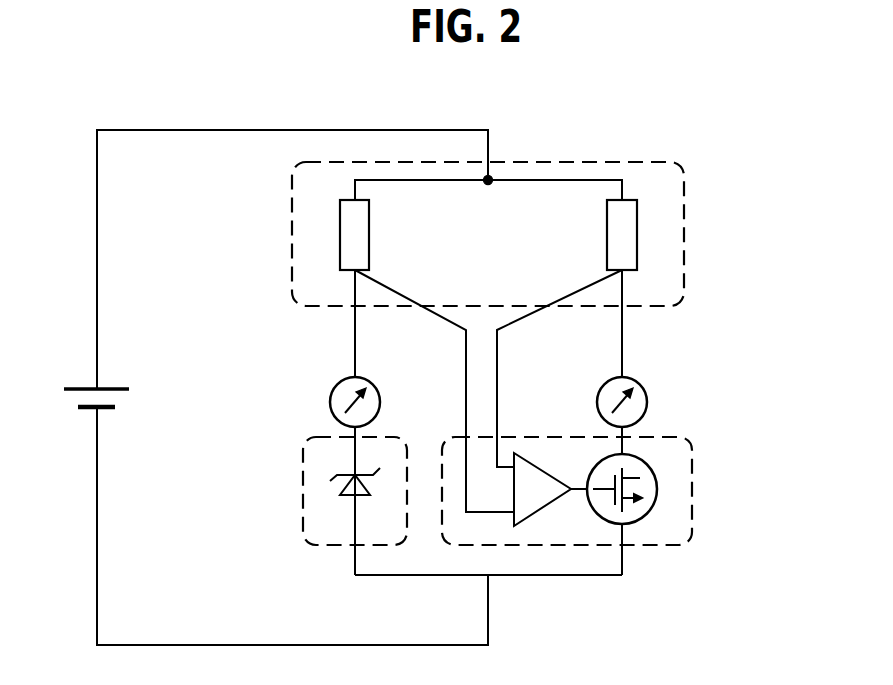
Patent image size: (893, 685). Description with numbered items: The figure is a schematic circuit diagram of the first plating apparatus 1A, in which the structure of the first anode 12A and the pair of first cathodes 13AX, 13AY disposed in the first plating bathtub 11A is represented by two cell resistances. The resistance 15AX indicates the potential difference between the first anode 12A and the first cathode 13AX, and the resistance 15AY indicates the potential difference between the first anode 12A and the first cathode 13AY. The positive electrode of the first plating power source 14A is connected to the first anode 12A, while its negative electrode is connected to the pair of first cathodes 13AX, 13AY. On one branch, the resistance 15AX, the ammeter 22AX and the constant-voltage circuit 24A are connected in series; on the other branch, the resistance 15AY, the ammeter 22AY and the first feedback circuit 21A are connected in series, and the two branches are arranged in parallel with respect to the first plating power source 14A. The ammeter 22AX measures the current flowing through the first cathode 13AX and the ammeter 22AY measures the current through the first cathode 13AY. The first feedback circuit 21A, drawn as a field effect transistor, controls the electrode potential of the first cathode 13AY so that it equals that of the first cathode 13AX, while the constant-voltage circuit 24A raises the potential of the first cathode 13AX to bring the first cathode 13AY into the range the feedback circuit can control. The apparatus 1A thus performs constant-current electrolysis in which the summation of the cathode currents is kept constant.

The first plating apparatus 1A is at (715, 117).
The first plating bathtub 11A is at (685, 204).
The first anode 12A is at (491, 178).
The first cathode 13AX is at (354, 272).
The first cathode 13AY is at (623, 272).
The first plating power source 14A is at (80, 388).
The resistance 15AX is at (340, 231).
The resistance 15AY is at (637, 233).
The first feedback circuit 21A is at (692, 478).
The ammeter 22AX is at (330, 402).
The ammeter 22AY is at (647, 402).
The constant-voltage circuit 24A is at (303, 481).